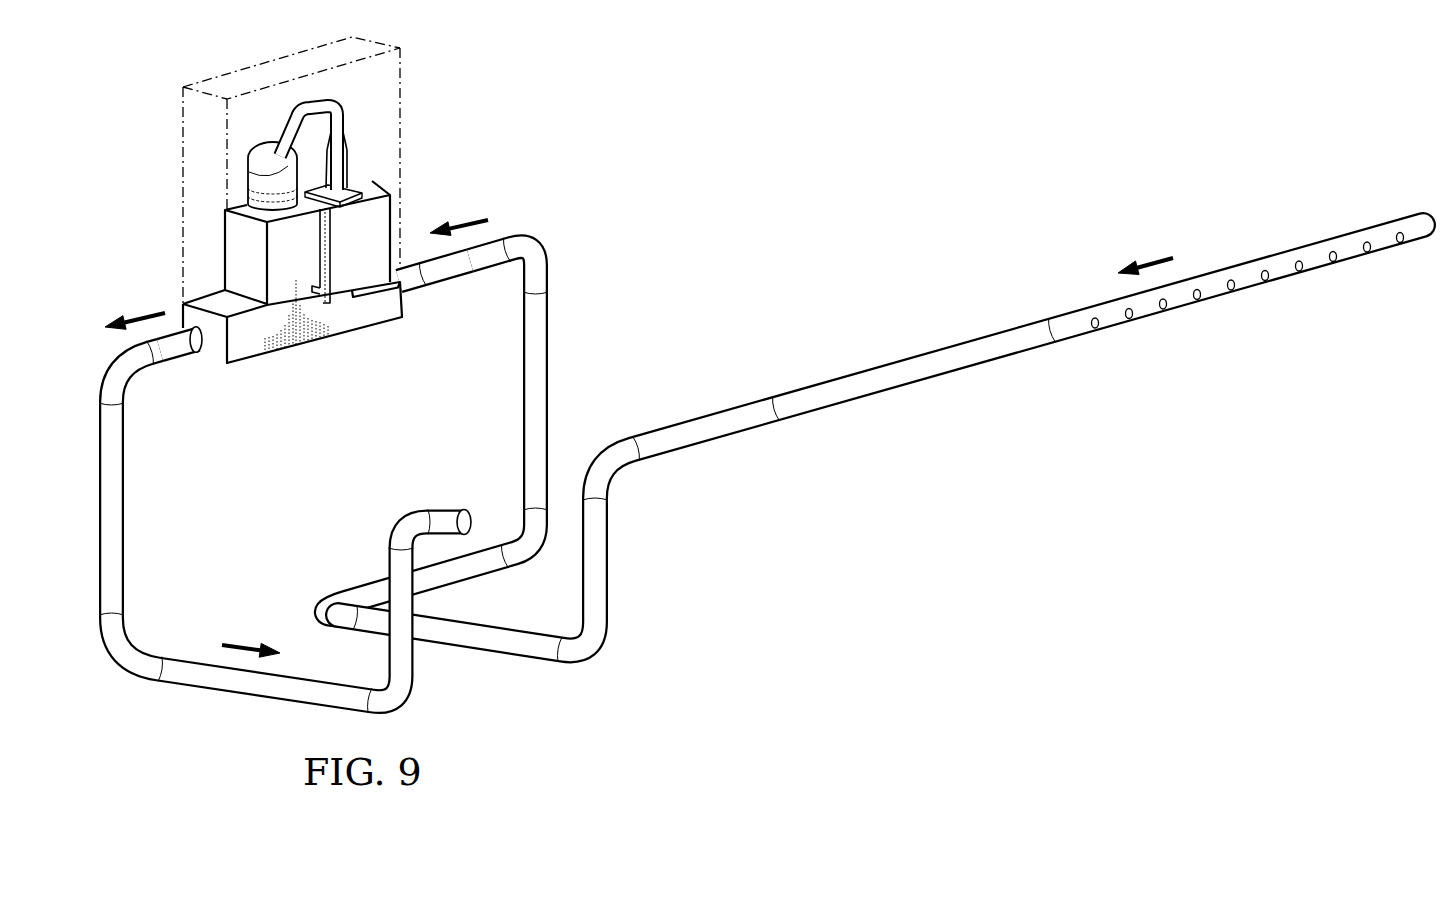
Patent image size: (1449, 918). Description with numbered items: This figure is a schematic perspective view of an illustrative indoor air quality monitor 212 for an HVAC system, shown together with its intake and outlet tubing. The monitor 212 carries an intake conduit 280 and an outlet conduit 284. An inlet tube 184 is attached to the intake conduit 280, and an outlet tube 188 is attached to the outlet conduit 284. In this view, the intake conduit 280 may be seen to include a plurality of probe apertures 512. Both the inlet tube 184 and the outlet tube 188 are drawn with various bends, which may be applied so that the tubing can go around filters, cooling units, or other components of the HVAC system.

The indoor air quality monitor 212 is at (301, 228).
The intake conduit 280 is at (415, 295).
The outlet conduit 284 is at (173, 358).
The outlet tube 188 is at (187, 689).
The inlet tube 184 is at (937, 379).
The probe apertures 512 is at (1100, 326).